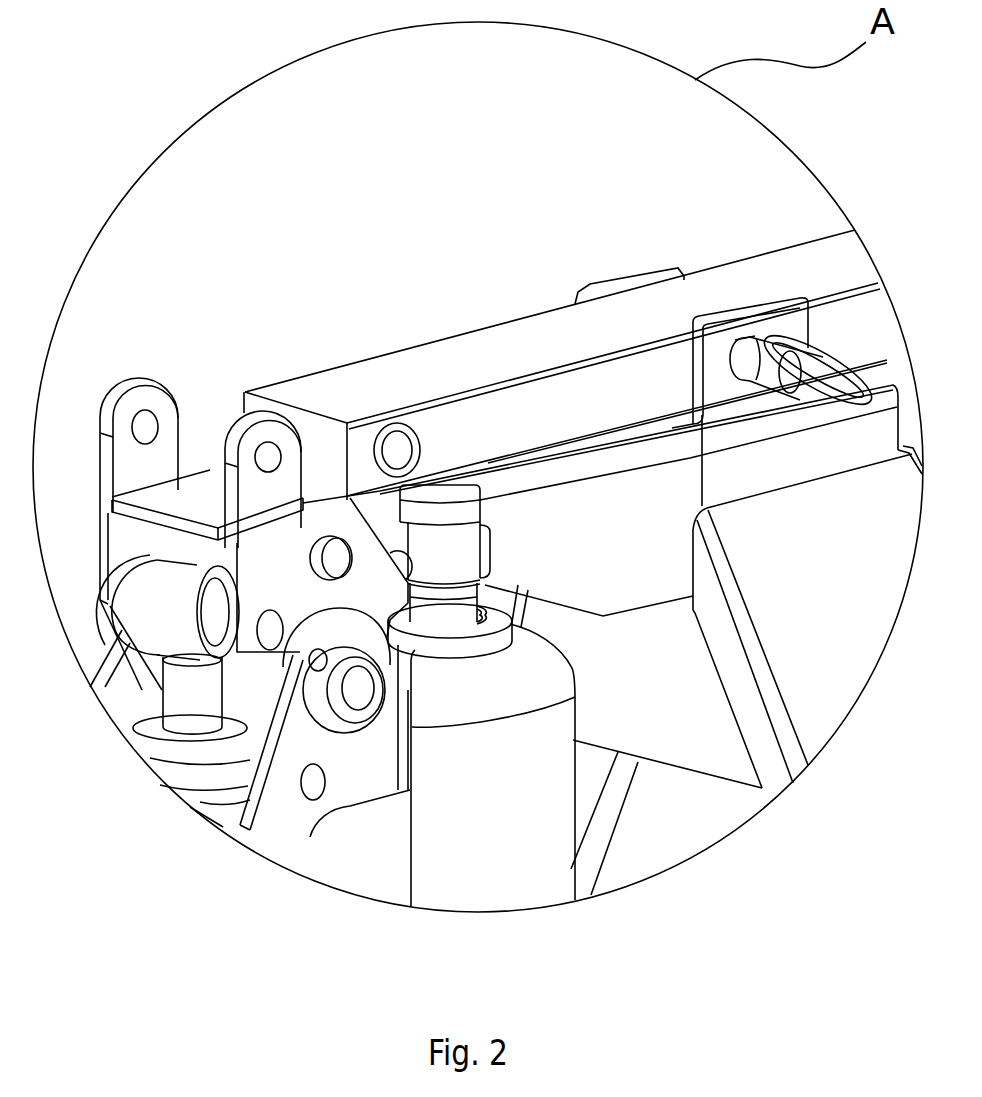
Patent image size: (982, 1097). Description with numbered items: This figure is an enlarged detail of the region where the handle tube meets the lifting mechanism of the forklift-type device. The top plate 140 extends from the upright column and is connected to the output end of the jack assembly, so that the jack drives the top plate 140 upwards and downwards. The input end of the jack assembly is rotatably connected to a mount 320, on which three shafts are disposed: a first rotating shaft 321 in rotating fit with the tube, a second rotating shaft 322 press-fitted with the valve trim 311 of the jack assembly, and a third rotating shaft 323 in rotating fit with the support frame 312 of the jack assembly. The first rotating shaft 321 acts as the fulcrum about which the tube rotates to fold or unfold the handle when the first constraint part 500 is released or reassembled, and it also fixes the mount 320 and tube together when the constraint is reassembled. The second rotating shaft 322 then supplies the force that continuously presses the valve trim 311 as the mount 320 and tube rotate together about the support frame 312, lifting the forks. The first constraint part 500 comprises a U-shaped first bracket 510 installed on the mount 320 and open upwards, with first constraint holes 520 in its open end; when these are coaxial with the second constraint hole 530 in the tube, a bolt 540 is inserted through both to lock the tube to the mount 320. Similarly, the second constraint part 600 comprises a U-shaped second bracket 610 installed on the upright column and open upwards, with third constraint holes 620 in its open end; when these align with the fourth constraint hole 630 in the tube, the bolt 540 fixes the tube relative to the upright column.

The top plate 140 is at (608, 499).
The valve trim 311 is at (185, 713).
The support frame 312 is at (287, 819).
The mount 320 is at (362, 551).
The first rotating shaft 321 is at (333, 562).
The second rotating shaft 322 is at (268, 633).
The third rotating shaft 323 is at (363, 693).
The first constraint part 500 is at (42, 207).
The first bracket 510 is at (173, 426).
The first constraint holes 520 is at (145, 424).
The second constraint hole 530 is at (395, 449).
The bolt 540 is at (766, 365).
The second constraint part 600 is at (613, 153).
The second bracket 610 is at (739, 325).
The third constraint holes 620 is at (800, 330).
The fourth constraint hole 630 is at (768, 340).